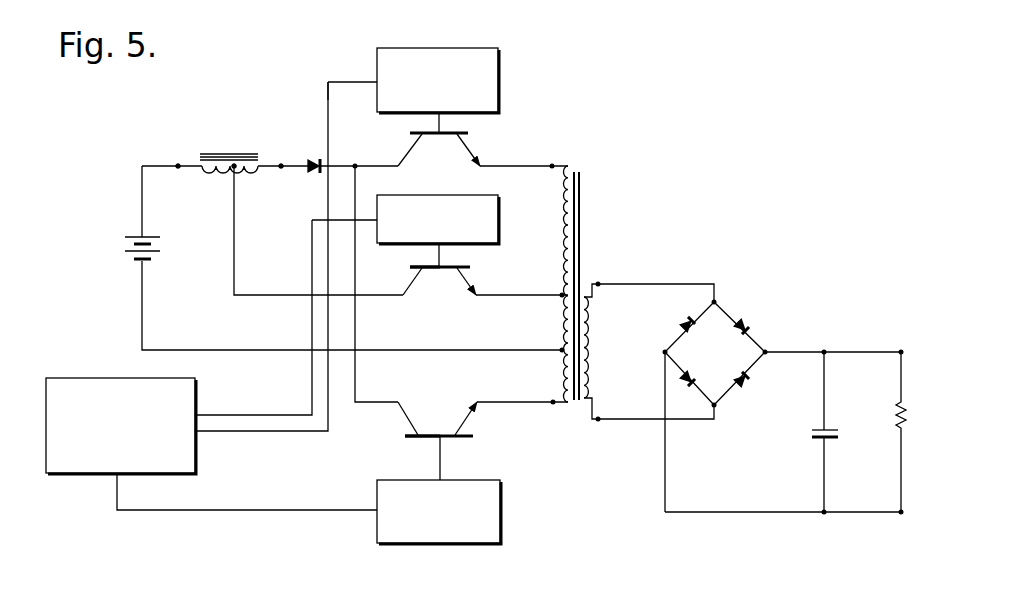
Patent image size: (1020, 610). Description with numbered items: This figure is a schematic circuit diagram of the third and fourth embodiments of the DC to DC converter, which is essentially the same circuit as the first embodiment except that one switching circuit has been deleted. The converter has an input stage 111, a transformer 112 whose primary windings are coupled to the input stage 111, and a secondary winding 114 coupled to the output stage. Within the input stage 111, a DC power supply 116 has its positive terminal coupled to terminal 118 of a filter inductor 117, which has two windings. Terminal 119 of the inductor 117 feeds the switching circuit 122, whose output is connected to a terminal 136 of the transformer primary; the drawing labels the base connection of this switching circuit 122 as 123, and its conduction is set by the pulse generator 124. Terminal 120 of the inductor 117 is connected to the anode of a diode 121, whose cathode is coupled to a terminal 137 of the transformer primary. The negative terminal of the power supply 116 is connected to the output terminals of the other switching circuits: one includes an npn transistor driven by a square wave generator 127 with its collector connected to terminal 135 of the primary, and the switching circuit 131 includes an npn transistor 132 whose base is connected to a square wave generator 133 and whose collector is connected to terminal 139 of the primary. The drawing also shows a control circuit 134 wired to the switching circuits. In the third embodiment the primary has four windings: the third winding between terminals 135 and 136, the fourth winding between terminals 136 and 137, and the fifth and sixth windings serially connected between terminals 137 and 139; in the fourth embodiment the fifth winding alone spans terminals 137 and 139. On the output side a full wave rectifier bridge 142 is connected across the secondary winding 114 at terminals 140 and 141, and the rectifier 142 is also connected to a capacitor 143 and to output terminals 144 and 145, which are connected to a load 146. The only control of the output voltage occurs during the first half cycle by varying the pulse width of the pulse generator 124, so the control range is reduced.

The input stage 111 is at (323, 83).
The transformer 112 is at (596, 229).
The secondary winding 114 is at (591, 331).
The DC power supply 116 is at (131, 238).
The filter inductor 117 is at (229, 122).
The terminal 118 is at (178, 165).
The terminal 119 is at (233, 170).
The terminal 120 is at (281, 164).
The diode 121 is at (311, 173).
The switching circuit 122 is at (478, 258).
The base of transistor 123 is at (414, 266).
The pulse generator 124 is at (487, 200).
The square wave generator 127 is at (494, 56).
The switching circuit 131 is at (482, 463).
The npn transistor 132 is at (404, 439).
The square wave generator 133 is at (380, 538).
The control circuit 134 is at (57, 463).
The terminal 135 is at (552, 164).
The terminal 136 is at (561, 297).
The terminal 137 is at (561, 349).
The terminal 139 is at (553, 405).
The terminal 140 is at (600, 283).
The terminal 141 is at (600, 422).
The full wave rectifier bridge 142 is at (735, 366).
The capacitor 143 is at (815, 440).
The output terminal 144 is at (901, 350).
The output terminal 145 is at (901, 515).
The load 146 is at (896, 423).